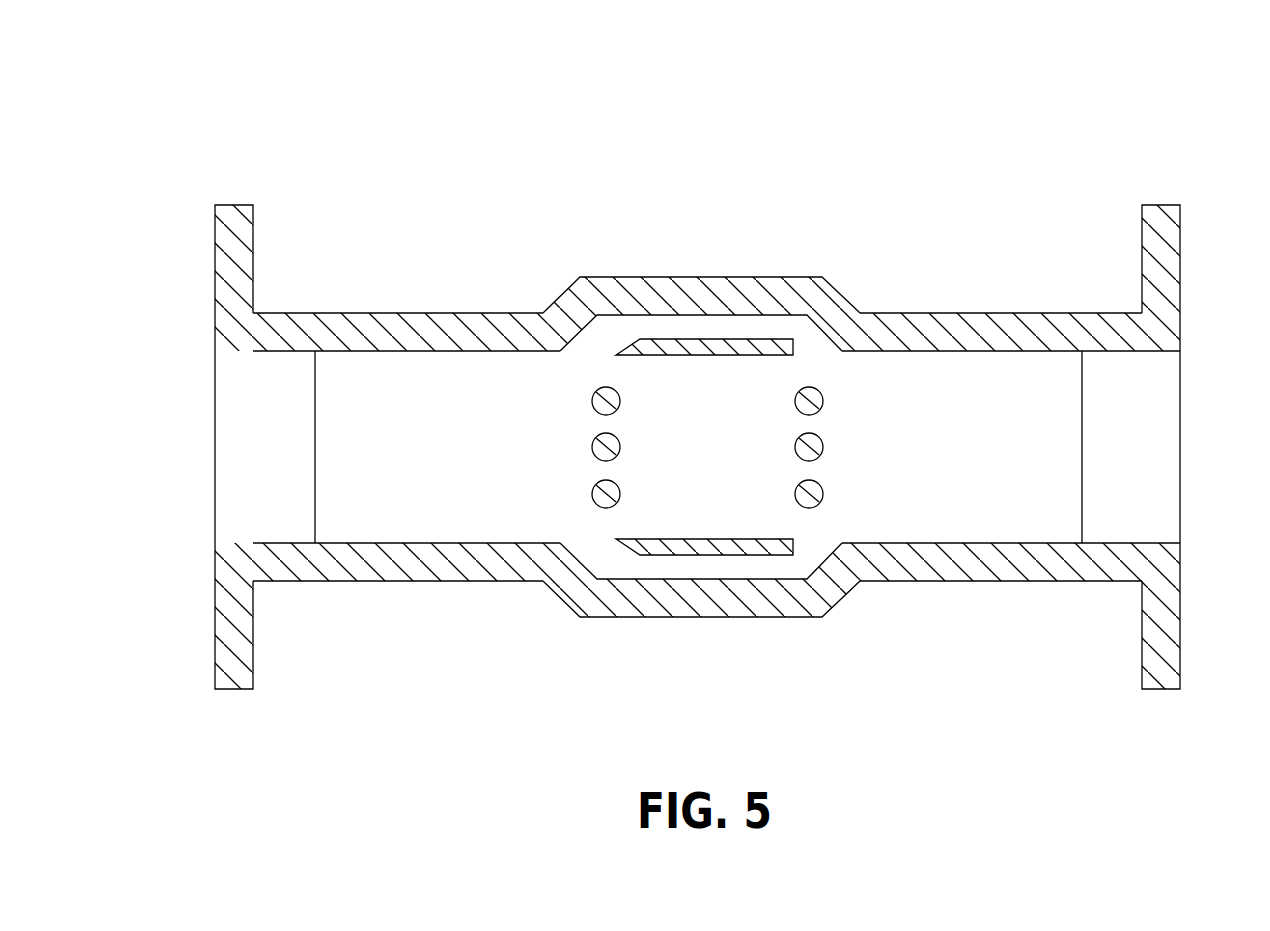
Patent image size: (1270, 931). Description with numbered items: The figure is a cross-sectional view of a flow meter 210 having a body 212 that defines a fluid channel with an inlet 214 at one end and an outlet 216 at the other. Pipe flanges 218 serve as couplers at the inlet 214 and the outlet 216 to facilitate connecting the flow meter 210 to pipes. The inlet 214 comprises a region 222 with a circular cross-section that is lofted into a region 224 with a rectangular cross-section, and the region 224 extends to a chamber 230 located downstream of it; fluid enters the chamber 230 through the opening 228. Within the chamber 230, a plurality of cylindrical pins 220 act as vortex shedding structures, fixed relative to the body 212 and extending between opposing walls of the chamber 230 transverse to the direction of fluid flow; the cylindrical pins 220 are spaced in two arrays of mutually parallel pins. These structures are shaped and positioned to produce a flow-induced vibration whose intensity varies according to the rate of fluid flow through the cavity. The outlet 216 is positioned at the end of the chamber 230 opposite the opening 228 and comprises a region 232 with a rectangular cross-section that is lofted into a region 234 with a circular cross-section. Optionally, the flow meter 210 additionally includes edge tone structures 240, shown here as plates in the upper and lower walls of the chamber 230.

The flow meter 210 is at (952, 152).
The body 212 is at (582, 302).
The inlet 214 is at (202, 428).
The outlet 216 is at (1190, 450).
The pipe flanges 218 is at (235, 233).
The cylindrical pins 220 is at (604, 403).
The region with circular cross-section 222 is at (243, 480).
The region with rectangular shaped cross-section 224 is at (488, 368).
The opening into the chamber 228 is at (550, 442).
The chamber 230 is at (719, 462).
The region comprising a rectangular cross-section 232 is at (905, 513).
The region with circular cross-section 234 is at (1150, 487).
The edge tone structures 240 is at (712, 348).